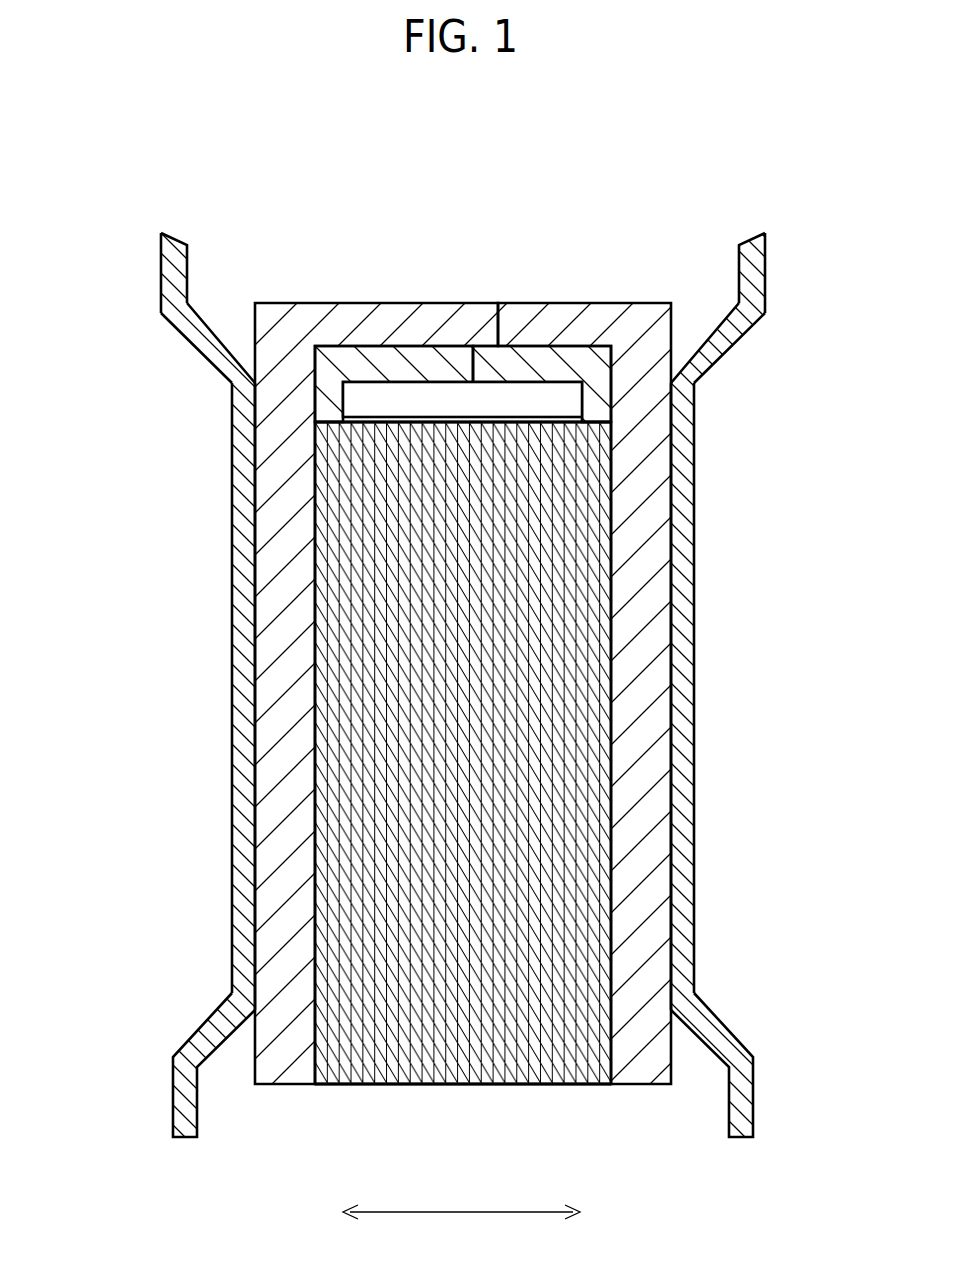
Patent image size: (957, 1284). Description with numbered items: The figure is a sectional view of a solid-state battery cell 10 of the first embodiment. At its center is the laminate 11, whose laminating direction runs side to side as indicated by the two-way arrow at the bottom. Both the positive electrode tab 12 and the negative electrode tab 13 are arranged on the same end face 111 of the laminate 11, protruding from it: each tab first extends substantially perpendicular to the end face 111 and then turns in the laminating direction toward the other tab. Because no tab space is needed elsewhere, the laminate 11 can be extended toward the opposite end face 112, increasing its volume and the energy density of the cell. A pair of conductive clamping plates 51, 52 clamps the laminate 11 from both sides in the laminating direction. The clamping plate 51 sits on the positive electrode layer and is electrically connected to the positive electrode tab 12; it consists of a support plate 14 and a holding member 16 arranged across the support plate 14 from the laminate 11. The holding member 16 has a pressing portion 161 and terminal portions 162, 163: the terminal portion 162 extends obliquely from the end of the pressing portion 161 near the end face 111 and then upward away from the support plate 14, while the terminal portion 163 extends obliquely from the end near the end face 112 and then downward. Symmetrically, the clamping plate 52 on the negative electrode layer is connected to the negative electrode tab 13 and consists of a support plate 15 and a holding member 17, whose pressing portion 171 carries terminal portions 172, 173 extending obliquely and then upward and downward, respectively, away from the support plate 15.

The solid-state battery cell 10 is at (700, 147).
The laminate 11 is at (463, 707).
The end face 111 is at (462, 420).
The end face 112 is at (465, 1087).
The positive electrode tab 12 is at (383, 370).
The negative electrode tab 13 is at (542, 368).
The support plate 14 is at (302, 320).
The support plate 15 is at (622, 320).
The holding member 16 is at (169, 667).
The pressing portion 161 is at (244, 687).
The terminal portion 162 is at (170, 277).
The terminal portion 163 is at (184, 1087).
The holding member 17 is at (757, 667).
The pressing portion 171 is at (682, 687).
The terminal portion 172 is at (756, 277).
The terminal portion 173 is at (742, 1087).
The clamping plate 51 is at (233, 310).
The clamping plate 52 is at (693, 310).